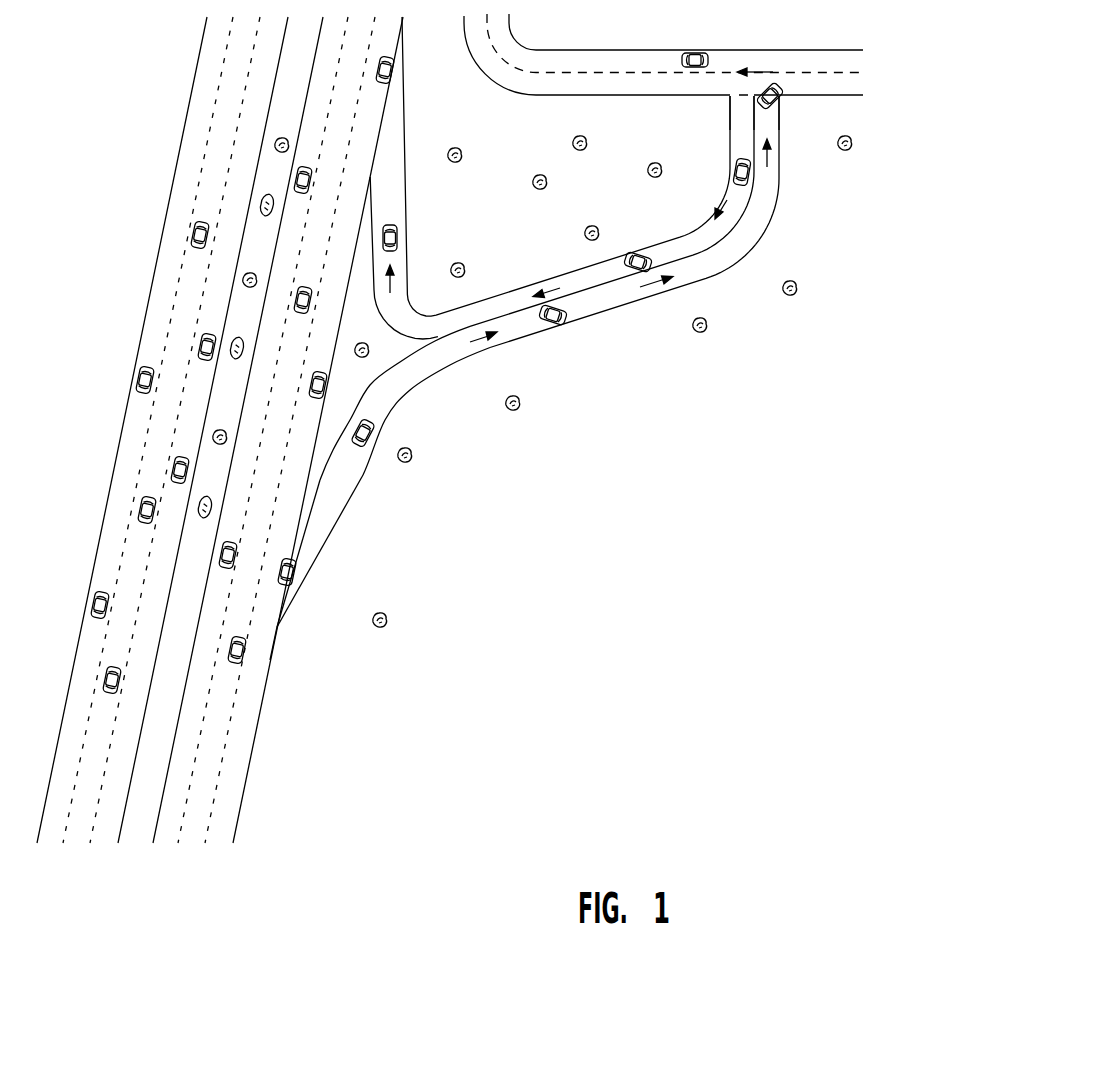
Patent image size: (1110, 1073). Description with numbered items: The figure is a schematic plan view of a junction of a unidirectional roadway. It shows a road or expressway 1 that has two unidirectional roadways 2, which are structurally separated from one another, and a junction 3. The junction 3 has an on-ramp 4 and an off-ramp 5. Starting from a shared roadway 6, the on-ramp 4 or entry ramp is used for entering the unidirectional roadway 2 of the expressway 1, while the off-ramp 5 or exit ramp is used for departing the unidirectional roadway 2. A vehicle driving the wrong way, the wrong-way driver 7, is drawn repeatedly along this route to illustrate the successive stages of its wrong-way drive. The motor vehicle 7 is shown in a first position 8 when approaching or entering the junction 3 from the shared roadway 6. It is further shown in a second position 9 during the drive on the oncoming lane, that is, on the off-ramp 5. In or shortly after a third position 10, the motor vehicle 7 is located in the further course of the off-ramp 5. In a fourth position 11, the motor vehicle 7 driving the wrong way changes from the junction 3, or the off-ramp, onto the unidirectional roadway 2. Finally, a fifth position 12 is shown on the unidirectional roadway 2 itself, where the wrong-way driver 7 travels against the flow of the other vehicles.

The expressway 1 is at (347, 742).
The unidirectional roadway 2 is at (193, 134).
The junction 3 is at (488, 412).
The on-ramp 4 is at (400, 197).
The off-ramp 5 is at (328, 507).
The shared roadway 6 is at (706, 278).
The wrong-way driver 7 is at (790, 100).
The first position 8 is at (792, 120).
The second position 9 is at (553, 347).
The third position 10 is at (416, 414).
The fourth position 11 is at (311, 597).
The fifth position 12 is at (416, 78).